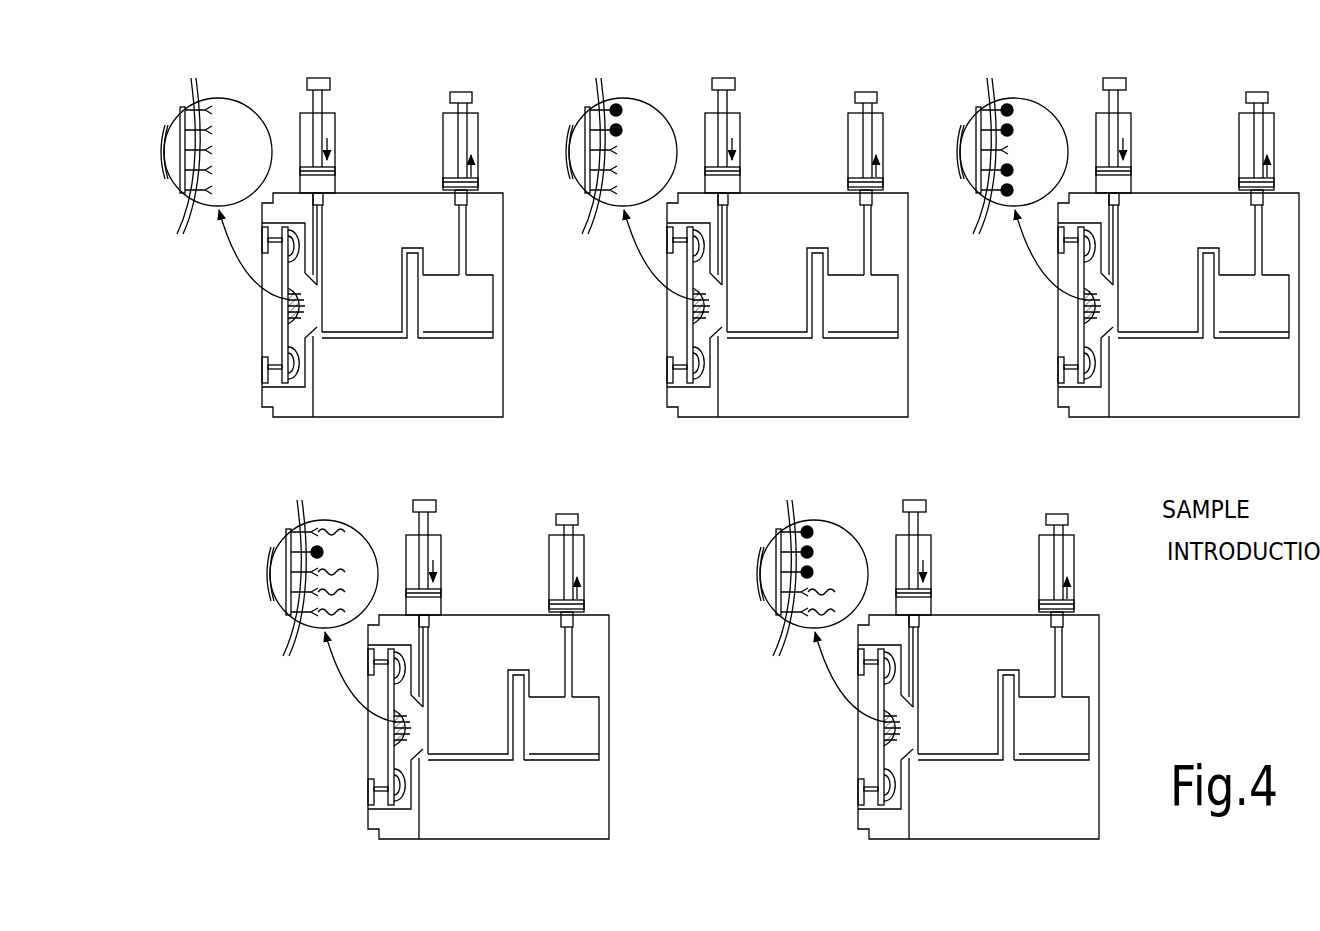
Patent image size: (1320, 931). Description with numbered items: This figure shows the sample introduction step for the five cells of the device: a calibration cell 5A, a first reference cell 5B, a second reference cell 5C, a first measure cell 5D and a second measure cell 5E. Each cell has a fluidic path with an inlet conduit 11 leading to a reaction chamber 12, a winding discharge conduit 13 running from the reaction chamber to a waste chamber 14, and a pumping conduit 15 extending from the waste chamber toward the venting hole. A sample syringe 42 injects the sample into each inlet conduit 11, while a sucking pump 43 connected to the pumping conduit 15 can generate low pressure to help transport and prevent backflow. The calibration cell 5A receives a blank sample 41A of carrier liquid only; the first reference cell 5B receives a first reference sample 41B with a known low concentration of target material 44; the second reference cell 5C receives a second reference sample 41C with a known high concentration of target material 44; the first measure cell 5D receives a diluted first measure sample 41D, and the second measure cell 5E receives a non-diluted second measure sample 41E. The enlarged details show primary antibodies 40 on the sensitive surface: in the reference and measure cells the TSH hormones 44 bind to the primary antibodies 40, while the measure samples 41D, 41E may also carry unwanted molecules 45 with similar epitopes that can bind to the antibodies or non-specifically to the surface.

The calibration cell 5A is at (397, 127).
The first reference cell 5B is at (787, 232).
The second reference cell 5C is at (1178, 235).
The first measure cell 5D is at (488, 656).
The second measure cell 5E is at (1023, 725).
The inlet conduit 11 is at (743, 473).
The reaction chamber 12 is at (733, 519).
The discharge conduit 13 is at (770, 520).
The waste chamber 14 is at (853, 517).
The pumping conduit 15 is at (879, 443).
The primary antibodies 40 is at (623, 390).
The blank sample 41A is at (320, 282).
The first reference sample 41B is at (738, 296).
The second reference sample 41C is at (1130, 292).
The first measure sample 41D is at (443, 707).
The second measure sample 41E is at (929, 712).
The sample syringe 42 is at (340, 143).
The sucking pump 43 is at (482, 150).
The target material 44 is at (692, 317).
The unwanted molecules 45 is at (586, 582).